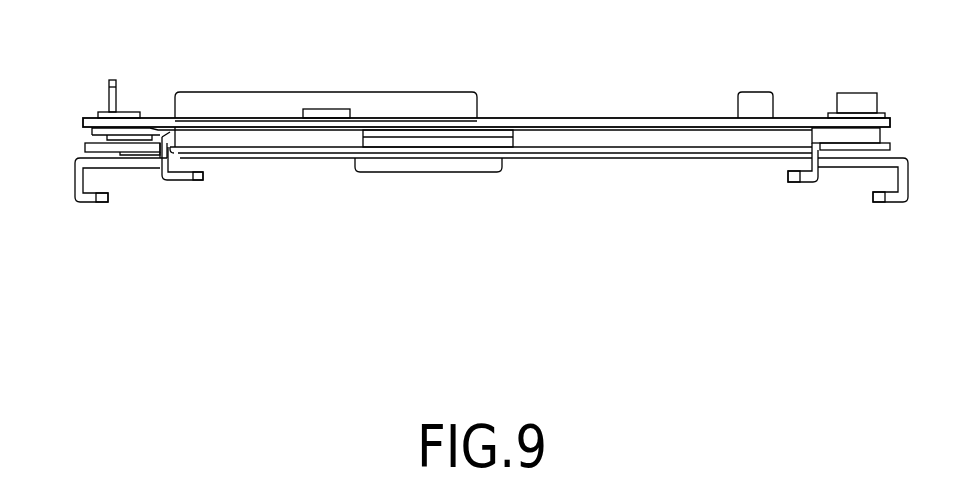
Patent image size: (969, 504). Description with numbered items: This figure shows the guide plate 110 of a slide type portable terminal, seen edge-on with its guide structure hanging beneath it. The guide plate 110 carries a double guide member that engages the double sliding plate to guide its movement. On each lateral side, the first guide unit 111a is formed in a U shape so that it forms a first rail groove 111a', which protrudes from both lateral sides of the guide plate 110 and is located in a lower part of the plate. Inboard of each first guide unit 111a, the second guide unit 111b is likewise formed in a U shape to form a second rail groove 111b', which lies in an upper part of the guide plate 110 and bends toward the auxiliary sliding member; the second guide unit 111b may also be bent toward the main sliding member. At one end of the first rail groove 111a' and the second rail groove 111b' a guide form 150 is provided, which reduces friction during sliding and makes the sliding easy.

The guide plate 110 is at (572, 135).
The first guide unit 111a is at (476, 220).
The first rail groove 111a' is at (487, 241).
The second guide unit 111b is at (498, 196).
The second rail groove 111b' is at (495, 205).
The guide form 150 is at (203, 177).